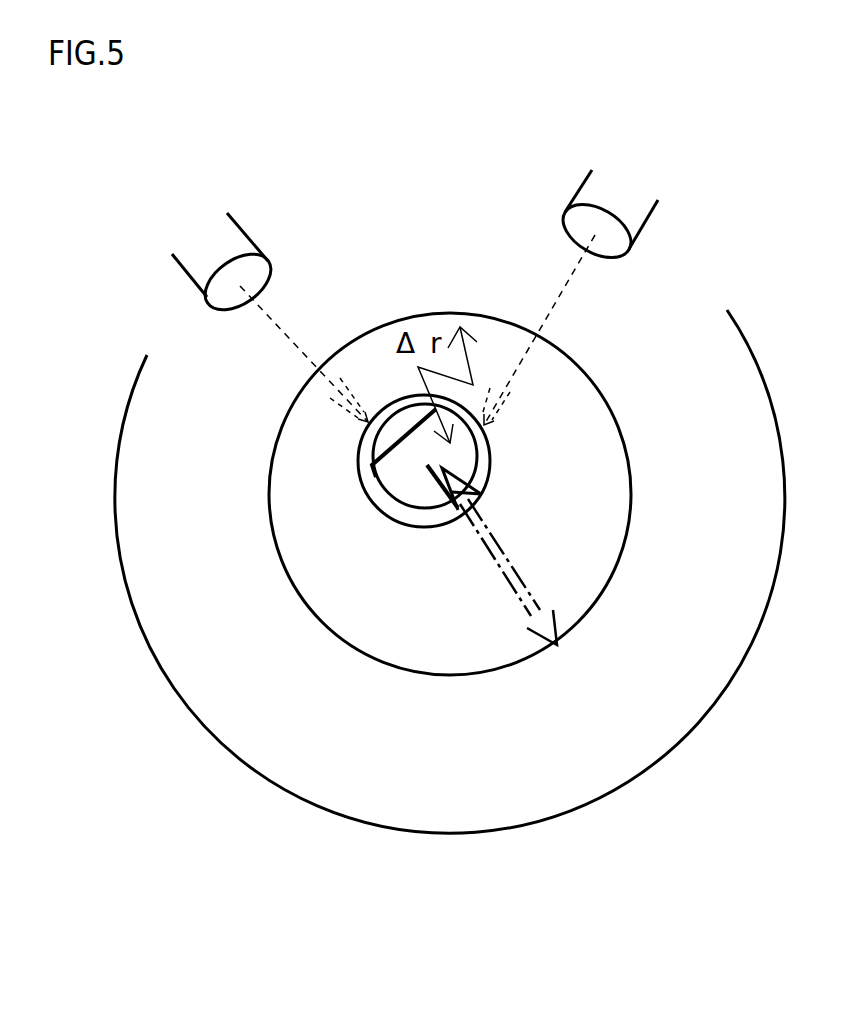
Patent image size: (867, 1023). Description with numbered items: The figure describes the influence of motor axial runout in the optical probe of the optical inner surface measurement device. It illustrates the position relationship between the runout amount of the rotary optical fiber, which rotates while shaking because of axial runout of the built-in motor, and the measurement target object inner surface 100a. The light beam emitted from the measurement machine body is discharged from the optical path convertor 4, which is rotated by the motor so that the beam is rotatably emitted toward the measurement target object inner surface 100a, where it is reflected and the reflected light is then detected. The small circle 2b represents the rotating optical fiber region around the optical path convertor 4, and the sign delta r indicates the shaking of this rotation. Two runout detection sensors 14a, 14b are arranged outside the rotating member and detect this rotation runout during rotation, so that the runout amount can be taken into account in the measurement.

The measurement target object inner surface 100a is at (622, 435).
The outer surface of shaft 2b is at (358, 460).
The optical path convertor 4 is at (398, 473).
The runout detection sensor 14a is at (218, 253).
The runout detection sensor 14b is at (607, 190).